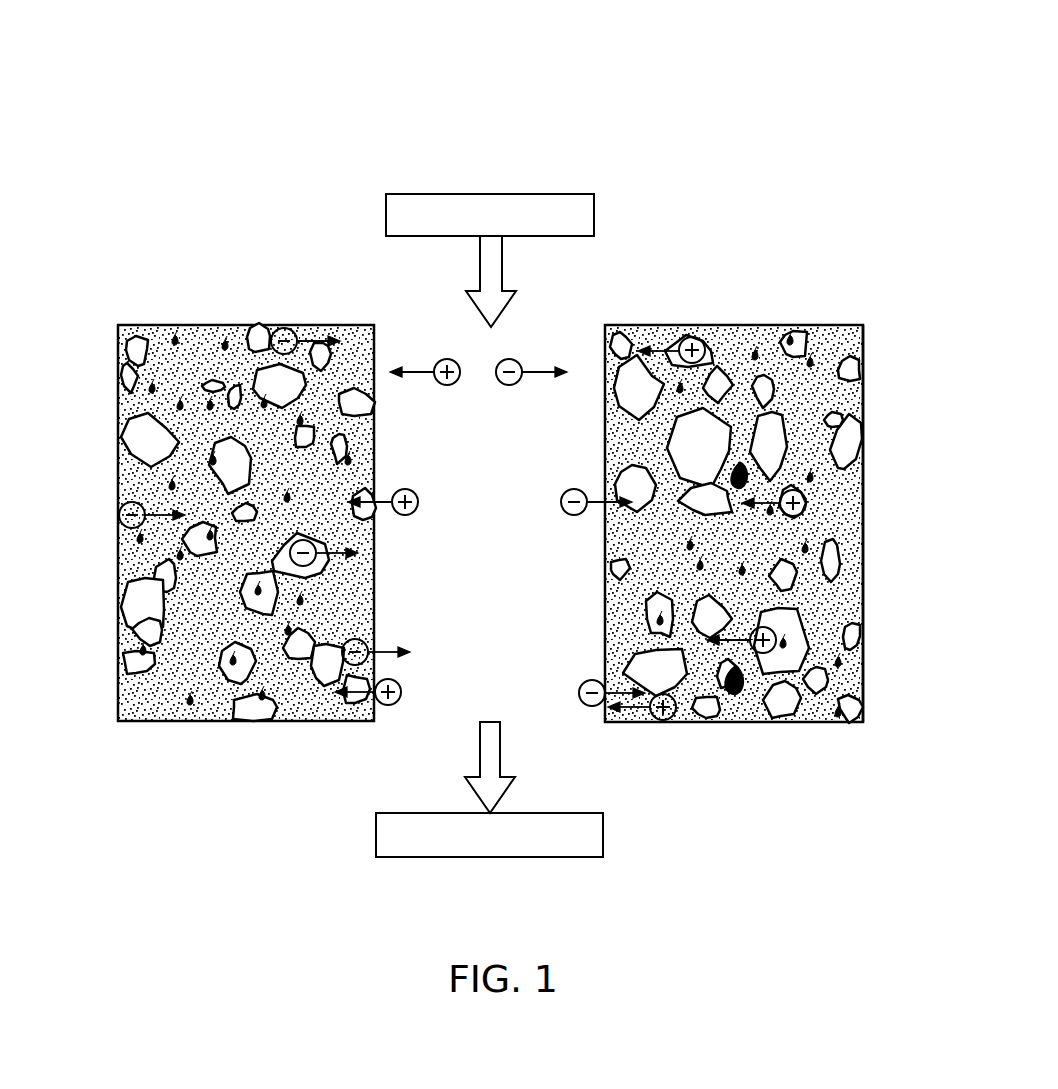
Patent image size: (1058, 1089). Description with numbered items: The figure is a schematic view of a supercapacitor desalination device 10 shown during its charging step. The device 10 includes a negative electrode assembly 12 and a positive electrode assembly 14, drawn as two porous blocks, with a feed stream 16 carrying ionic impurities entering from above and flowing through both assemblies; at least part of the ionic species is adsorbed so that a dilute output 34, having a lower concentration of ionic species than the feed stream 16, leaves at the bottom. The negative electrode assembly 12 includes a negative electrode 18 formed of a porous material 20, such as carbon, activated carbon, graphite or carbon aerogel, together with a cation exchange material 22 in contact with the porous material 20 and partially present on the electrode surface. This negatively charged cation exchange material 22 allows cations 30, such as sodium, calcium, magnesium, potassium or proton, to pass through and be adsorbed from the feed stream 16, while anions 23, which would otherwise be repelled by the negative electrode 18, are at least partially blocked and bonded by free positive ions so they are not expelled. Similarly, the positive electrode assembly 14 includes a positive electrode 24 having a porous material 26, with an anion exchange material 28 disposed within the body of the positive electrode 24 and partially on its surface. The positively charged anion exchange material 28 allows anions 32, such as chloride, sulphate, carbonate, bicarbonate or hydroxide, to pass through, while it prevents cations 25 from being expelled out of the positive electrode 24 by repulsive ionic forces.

The supercapacitor desalination device 10 is at (812, 70).
The negative electrode assembly 12 is at (226, 529).
The positive electrode assembly 14 is at (757, 528).
The feed stream 16 is at (594, 213).
The negative electrode 18 is at (118, 433).
The porous material 20 is at (118, 553).
The cation exchange material 22 is at (313, 700).
The anions 23 is at (283, 327).
The positive electrode 24 is at (863, 403).
The cations 25 is at (692, 336).
The porous material 26 is at (863, 557).
The anion exchange material 28 is at (832, 598).
The cations 30 is at (447, 386).
The anions 32 is at (509, 386).
The dilute output 34 is at (603, 835).